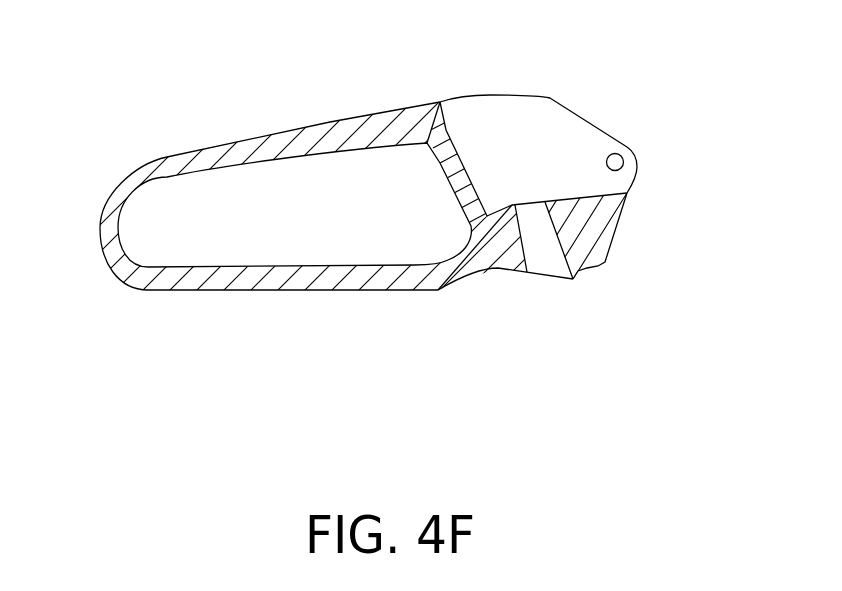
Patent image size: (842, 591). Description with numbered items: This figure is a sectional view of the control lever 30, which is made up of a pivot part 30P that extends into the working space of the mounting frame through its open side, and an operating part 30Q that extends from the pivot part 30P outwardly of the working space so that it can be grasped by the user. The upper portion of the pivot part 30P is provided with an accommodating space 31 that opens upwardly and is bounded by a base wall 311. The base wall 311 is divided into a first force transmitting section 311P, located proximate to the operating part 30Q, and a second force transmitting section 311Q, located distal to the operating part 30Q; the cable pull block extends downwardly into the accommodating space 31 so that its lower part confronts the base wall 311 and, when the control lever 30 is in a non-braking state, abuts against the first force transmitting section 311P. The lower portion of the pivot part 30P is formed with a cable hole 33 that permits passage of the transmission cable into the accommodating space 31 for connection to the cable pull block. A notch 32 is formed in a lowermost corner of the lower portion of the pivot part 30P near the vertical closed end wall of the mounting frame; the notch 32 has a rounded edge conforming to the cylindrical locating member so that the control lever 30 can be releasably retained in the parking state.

The control lever 30 is at (350, 318).
The operating part 30Q is at (162, 292).
The pivot part 30P is at (617, 232).
The accommodating space 31 is at (533, 117).
The base wall 311 is at (560, 174).
The first force transmitting section 311P is at (498, 212).
The second force transmitting section 311Q is at (593, 193).
The notch 32 is at (597, 267).
The cable hole 33 is at (543, 263).